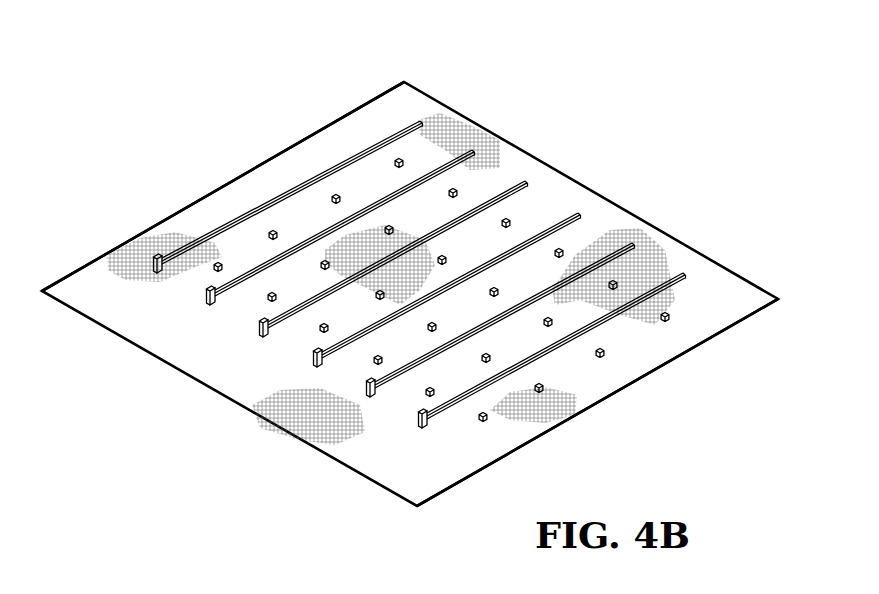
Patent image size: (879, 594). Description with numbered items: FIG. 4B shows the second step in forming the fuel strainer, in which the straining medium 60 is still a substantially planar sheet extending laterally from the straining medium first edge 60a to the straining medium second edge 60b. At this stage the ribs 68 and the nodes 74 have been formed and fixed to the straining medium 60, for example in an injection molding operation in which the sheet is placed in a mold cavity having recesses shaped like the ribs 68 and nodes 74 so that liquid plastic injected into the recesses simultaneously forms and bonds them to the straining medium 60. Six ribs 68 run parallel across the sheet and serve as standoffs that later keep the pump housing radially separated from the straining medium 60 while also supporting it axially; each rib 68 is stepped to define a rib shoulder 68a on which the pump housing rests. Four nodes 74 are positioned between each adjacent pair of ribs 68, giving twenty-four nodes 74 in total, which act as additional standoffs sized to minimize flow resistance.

The straining medium 60 is at (143, 300).
The straining medium first edge 60a is at (318, 130).
The straining medium second edge 60b is at (567, 422).
The rib 68 is at (437, 168).
The rib shoulder 68a is at (163, 263).
The node 74 is at (325, 262).